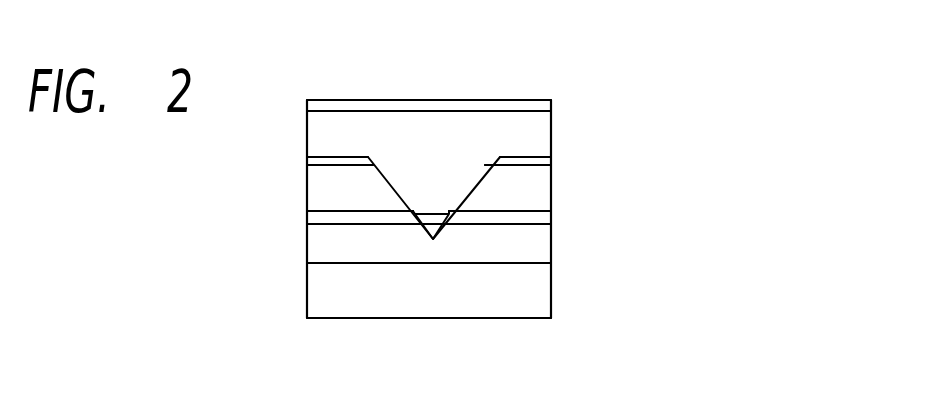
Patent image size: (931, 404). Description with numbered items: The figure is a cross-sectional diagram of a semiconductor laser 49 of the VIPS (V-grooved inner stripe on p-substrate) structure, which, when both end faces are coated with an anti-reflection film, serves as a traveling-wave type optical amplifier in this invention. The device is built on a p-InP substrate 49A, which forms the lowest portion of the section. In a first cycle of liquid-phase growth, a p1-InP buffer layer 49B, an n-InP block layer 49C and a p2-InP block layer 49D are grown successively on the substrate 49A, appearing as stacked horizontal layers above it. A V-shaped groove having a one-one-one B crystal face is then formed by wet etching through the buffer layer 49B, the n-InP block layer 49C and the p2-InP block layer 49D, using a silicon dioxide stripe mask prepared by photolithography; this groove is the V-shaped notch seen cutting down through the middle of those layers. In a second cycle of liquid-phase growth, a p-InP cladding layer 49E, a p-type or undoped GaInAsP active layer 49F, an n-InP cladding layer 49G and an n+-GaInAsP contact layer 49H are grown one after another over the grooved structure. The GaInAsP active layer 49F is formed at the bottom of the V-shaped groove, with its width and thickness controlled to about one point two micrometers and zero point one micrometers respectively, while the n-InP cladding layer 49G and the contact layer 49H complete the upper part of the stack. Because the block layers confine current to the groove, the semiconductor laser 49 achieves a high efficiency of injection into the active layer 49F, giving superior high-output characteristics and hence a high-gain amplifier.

The semiconductor laser 49 is at (270, 143).
The p-InP substrate 49A is at (427, 311).
The p1-InP buffer layer 49B is at (537, 248).
The n-InP block layer 49C is at (535, 219).
The p2-InP block layer 49D is at (535, 199).
The p-InP cladding layer 49E is at (438, 218).
The GaInAsP active layer 49F is at (440, 200).
The n-InP cladding layer 49G is at (537, 127).
The n+-GaInAsP contact layer 49H is at (537, 101).